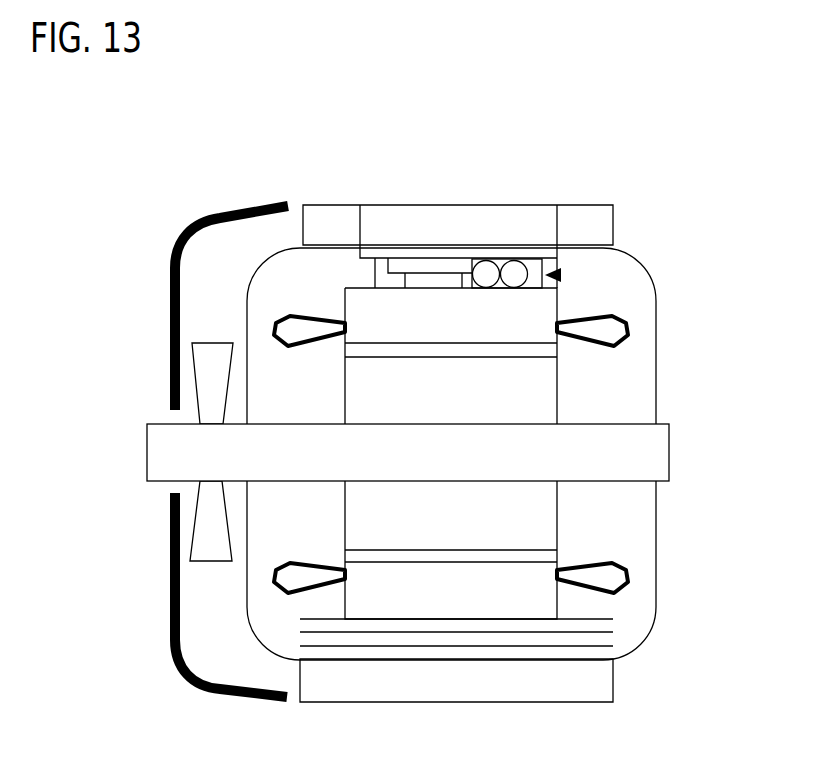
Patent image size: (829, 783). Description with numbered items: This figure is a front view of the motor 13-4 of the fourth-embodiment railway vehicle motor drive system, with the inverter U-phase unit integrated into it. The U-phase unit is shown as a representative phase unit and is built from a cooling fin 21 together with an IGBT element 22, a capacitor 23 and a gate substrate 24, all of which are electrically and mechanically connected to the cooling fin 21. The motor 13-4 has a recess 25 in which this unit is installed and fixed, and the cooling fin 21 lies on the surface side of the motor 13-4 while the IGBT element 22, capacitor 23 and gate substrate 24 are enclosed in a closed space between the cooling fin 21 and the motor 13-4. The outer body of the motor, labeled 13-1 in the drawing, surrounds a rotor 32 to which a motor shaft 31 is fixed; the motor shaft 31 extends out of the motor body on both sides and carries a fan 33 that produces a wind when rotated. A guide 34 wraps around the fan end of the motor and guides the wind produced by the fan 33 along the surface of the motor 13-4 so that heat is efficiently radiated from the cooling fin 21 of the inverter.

The motor 13-4 is at (457, 120).
The motor housing 13-1 is at (662, 318).
The cooling fin 21 is at (497, 212).
The IGBT element 22 is at (433, 265).
The capacitor 23 is at (526, 272).
The gate substrate 24 is at (388, 252).
The recess 25 is at (561, 275).
The motor shaft 31 is at (667, 433).
The rotor 32 is at (540, 518).
The fan 33 is at (205, 375).
The guide 34 is at (168, 585).